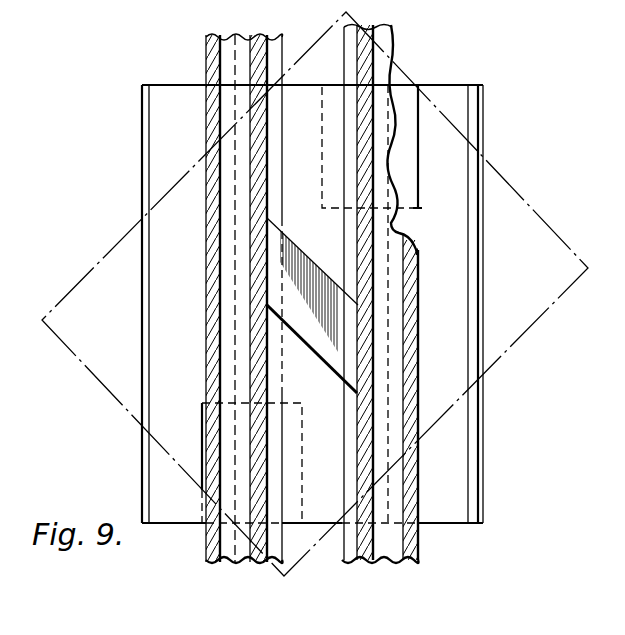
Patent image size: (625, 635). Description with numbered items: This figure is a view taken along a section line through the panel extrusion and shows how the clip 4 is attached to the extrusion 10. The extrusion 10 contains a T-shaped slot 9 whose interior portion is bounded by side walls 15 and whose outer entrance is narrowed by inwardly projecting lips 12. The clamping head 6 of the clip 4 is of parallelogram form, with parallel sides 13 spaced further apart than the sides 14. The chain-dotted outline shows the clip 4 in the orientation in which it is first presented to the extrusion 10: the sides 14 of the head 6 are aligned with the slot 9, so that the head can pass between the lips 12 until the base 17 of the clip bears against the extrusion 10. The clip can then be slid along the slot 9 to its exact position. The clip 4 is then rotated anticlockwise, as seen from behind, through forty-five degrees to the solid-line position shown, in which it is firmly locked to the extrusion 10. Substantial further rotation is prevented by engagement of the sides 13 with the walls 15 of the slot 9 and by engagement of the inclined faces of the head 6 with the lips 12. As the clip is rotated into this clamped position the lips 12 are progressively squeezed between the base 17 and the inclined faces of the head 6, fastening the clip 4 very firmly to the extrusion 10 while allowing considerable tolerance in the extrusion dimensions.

The clip 4 is at (445, 88).
The clamping head 6 is at (327, 273).
The slot 9 is at (315, 545).
The extrusion 10 is at (206, 58).
The lips 12 is at (282, 553).
The sides of the head 13 is at (268, 244).
The sides of the head 14 is at (295, 242).
The side walls 15 is at (358, 62).
The base 17 is at (306, 511).